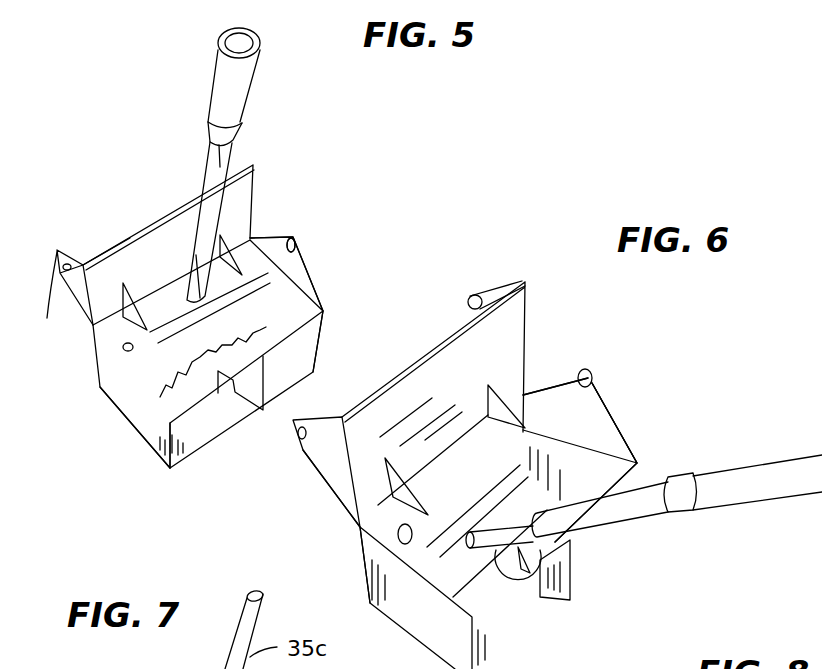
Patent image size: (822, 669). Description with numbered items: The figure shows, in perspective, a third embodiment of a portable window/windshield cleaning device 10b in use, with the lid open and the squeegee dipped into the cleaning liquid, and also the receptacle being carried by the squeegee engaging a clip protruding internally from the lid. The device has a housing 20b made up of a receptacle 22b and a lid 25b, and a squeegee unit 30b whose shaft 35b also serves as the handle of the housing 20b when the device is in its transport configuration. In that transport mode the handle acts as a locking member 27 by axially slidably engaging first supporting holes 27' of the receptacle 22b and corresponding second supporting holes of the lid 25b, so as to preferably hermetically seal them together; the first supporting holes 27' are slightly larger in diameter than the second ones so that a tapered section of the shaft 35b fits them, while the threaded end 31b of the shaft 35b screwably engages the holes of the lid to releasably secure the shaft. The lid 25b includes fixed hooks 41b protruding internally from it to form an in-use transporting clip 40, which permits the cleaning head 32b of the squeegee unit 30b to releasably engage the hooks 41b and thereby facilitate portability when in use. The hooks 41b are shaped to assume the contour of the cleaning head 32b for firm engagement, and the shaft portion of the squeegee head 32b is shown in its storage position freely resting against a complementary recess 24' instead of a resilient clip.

In FIG. 5, the portable window/windshield cleaning device 10b is at (116, 106).
In FIG. 6, the portable window/windshield cleaning device 10b is at (640, 603).
In FIG. 5, the housing 20b is at (143, 221).
In FIG. 6, the housing 20b is at (440, 330).
In FIG. 5, the receptacle 22b is at (318, 330).
In FIG. 6, the receptacle 22b is at (623, 427).
In FIG. 5, the complementary recess 24' is at (139, 421).
In FIG. 6, the complementary recess 24' is at (536, 556).
In FIG. 5, the lid 25b is at (170, 208).
In FIG. 6, the lid 25b is at (357, 407).
In FIG. 5, the locking member 27 is at (343, 226).
In FIG. 6, the locking member 27 is at (645, 352).
In FIG. 5, the first supporting holes 27' is at (321, 216).
In FIG. 6, the first supporting holes 27' is at (577, 287).
In FIG. 5, the squeegee unit 30b is at (259, 165).
In FIG. 6, the squeegee unit 30b is at (657, 482).
In FIG. 6, the threaded end 31b is at (595, 520).
In FIG. 5, the cleaning head 32b is at (162, 316).
In FIG. 6, the cleaning head 32b is at (453, 558).
In FIG. 5, the shaft 35b is at (210, 140).
In FIG. 6, the shaft 35b is at (672, 508).
In FIG. 5, the in-use transporting clip 40 is at (252, 237).
In FIG. 6, the in-use transporting clip 40 is at (516, 401).
In FIG. 5, the fixed hooks 41b is at (127, 335).
In FIG. 6, the fixed hooks 41b is at (505, 378).